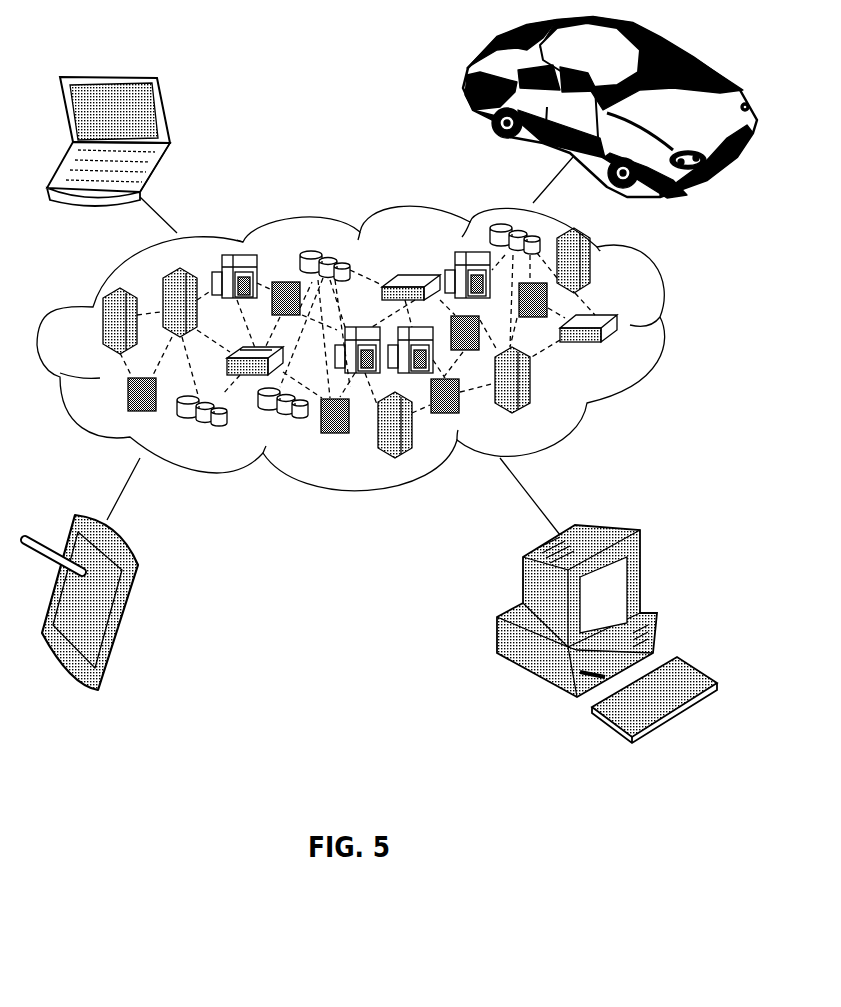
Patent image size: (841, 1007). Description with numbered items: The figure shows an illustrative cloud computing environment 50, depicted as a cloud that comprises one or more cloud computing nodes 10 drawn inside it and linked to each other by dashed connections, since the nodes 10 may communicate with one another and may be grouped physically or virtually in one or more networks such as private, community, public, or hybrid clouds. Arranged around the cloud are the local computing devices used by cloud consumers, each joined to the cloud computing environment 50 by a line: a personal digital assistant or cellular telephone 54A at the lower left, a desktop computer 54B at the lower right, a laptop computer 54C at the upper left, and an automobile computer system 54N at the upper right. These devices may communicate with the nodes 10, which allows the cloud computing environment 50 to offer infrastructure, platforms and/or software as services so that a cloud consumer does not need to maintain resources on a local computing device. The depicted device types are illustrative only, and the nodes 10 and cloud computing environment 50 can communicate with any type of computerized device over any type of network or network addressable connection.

The cloud computing node 10 is at (623, 352).
The cloud computing environment 50 is at (667, 328).
The personal digital assistant or cellular telephone 54A is at (133, 593).
The desktop computer 54B is at (617, 523).
The laptop computer 54C is at (163, 112).
The automobile computer system 54N is at (466, 85).